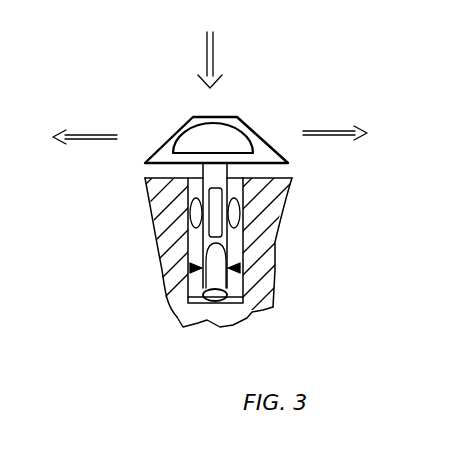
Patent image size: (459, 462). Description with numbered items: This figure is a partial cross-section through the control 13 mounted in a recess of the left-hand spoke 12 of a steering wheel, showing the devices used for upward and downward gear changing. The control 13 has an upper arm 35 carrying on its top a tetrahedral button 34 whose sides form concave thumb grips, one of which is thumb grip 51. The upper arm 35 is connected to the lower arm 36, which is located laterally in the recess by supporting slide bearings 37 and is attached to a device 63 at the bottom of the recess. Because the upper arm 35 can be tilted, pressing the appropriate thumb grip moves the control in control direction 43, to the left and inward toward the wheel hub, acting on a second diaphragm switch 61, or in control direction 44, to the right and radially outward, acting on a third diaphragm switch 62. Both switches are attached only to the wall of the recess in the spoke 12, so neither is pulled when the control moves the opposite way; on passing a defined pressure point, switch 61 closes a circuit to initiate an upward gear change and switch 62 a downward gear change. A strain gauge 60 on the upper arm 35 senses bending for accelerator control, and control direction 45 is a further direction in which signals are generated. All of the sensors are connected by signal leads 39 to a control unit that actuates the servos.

The spoke 12 is at (289, 188).
The control 13 is at (263, 117).
The tetrahedral button 34 is at (167, 142).
The upper arm 35 is at (192, 268).
The lower arm 36 is at (238, 301).
The slide bearings 37 is at (196, 275).
The signal leads 39 is at (186, 239).
The control direction 43 is at (72, 142).
The control direction 44 is at (349, 139).
The control direction 45 is at (213, 46).
The thumb grip 51 is at (218, 140).
The strain gauge 60 is at (186, 188).
The second diaphragm switch 61 is at (189, 213).
The third diaphragm switch 62 is at (268, 212).
The device 63 is at (222, 325).